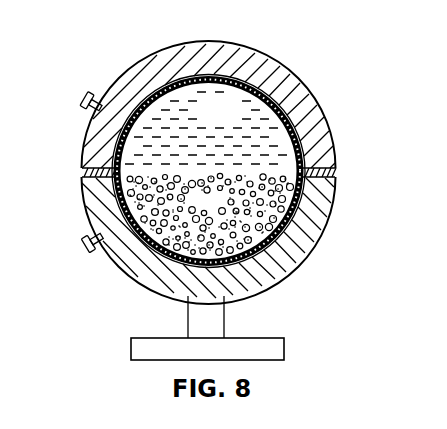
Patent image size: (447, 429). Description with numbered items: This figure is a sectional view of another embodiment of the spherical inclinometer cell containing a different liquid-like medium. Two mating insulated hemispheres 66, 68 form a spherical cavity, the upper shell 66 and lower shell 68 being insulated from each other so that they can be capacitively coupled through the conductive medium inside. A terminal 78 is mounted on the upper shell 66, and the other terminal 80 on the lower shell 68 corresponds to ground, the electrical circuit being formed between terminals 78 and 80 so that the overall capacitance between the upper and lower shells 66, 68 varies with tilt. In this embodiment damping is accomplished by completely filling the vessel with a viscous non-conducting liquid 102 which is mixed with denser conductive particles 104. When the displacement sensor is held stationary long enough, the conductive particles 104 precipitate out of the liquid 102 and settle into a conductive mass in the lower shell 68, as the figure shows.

The upper hemispherical shell 66 is at (178, 65).
The lower hemispherical shell 68 is at (291, 246).
The terminal 78 is at (80, 98).
The terminal 80 is at (78, 246).
The viscous non-conducting liquid 102 is at (225, 126).
The conductive particles 104 is at (226, 213).